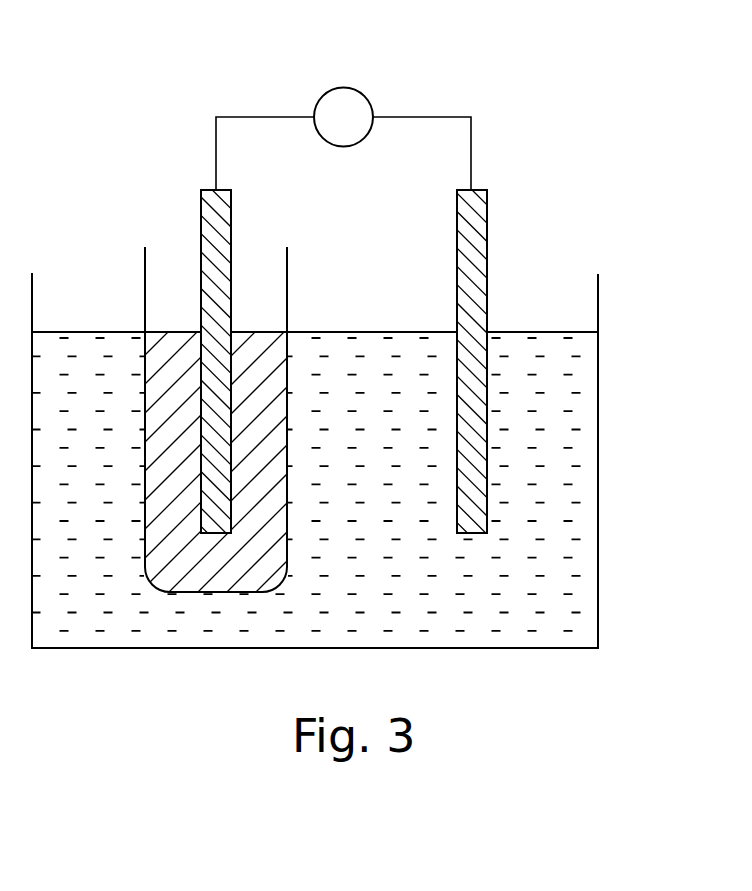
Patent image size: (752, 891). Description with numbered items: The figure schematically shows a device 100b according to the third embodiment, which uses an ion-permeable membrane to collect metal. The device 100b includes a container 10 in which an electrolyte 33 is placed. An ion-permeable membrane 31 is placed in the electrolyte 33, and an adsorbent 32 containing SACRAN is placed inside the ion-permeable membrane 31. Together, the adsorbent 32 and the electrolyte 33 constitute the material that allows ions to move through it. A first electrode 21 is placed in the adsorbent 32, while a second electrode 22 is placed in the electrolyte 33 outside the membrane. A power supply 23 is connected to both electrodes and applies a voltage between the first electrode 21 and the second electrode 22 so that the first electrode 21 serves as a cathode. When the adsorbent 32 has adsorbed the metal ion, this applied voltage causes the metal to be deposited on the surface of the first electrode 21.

The device 100b is at (107, 88).
The container 10 is at (599, 303).
The first electrode 21 is at (200, 201).
The second electrode 22 is at (488, 202).
The power supply 23 is at (367, 98).
The ion-permeable membrane 31 is at (288, 277).
The adsorbent 32 is at (260, 341).
The electrolyte 33 is at (588, 390).